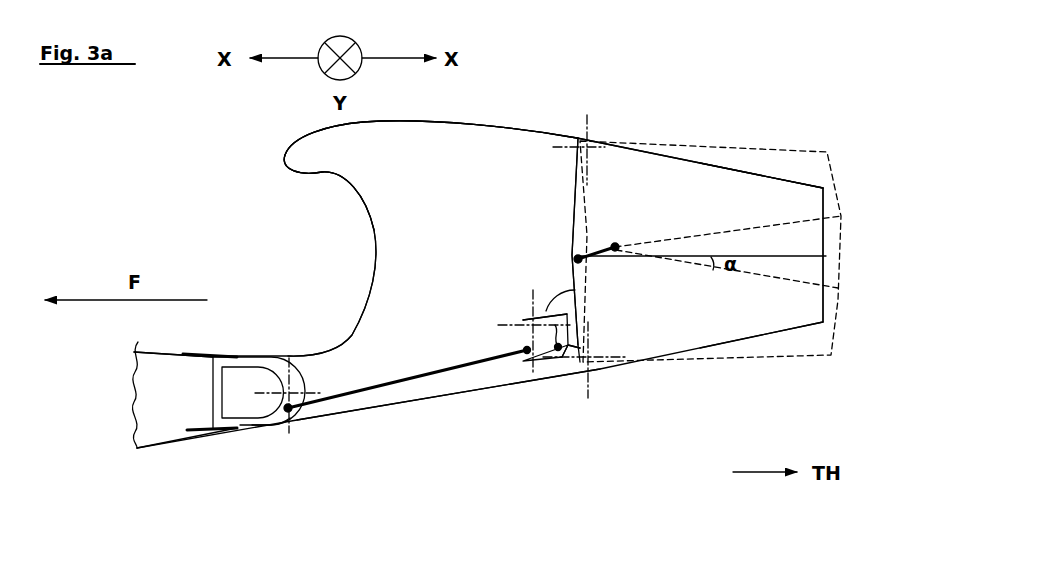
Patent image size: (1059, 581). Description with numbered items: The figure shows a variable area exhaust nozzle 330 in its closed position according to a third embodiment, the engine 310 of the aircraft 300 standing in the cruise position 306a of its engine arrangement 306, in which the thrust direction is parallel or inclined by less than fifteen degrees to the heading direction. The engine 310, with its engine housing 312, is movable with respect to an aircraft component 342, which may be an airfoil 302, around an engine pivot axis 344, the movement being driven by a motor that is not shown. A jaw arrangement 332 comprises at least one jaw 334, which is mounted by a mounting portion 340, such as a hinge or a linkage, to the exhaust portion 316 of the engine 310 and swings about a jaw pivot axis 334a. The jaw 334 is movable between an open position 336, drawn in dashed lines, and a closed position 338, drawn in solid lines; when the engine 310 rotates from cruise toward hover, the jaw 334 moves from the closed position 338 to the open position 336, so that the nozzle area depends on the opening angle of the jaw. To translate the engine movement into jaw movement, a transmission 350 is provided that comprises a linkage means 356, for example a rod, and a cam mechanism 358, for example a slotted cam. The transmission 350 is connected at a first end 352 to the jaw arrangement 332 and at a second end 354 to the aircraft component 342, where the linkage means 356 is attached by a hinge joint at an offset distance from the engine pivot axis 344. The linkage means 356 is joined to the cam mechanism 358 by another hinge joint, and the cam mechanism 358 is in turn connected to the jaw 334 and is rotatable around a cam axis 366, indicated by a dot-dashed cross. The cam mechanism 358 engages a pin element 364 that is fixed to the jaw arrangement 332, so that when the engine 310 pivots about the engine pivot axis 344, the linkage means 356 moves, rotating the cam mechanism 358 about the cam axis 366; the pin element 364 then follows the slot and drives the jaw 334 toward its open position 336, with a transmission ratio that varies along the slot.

The aircraft 300 is at (251, 167).
The airfoil 302 is at (146, 388).
The engine arrangement 306 is at (181, 247).
The cruise position 306a is at (243, 209).
The engine 310 is at (300, 281).
The engine housing 312 is at (492, 126).
The exhaust portion 316 is at (572, 173).
The variable area exhaust nozzle 330 is at (740, 147).
The jaw arrangement 332 is at (683, 147).
The jaw 334 is at (781, 166).
The jaw pivot axis 334a is at (582, 136).
The open position 336 is at (801, 369).
The closed position 338 is at (834, 251).
The mounting portion 340 is at (556, 294).
The aircraft component 342 is at (164, 424).
The engine pivot axis 344 is at (284, 387).
The transmission 350 is at (507, 367).
The first end 352 is at (533, 315).
The second end 354 is at (281, 422).
The linkage means 356 is at (438, 378).
The cam mechanism 358 is at (543, 364).
The coupling step 364 is at (570, 358).
The cam axis 366 is at (521, 324).